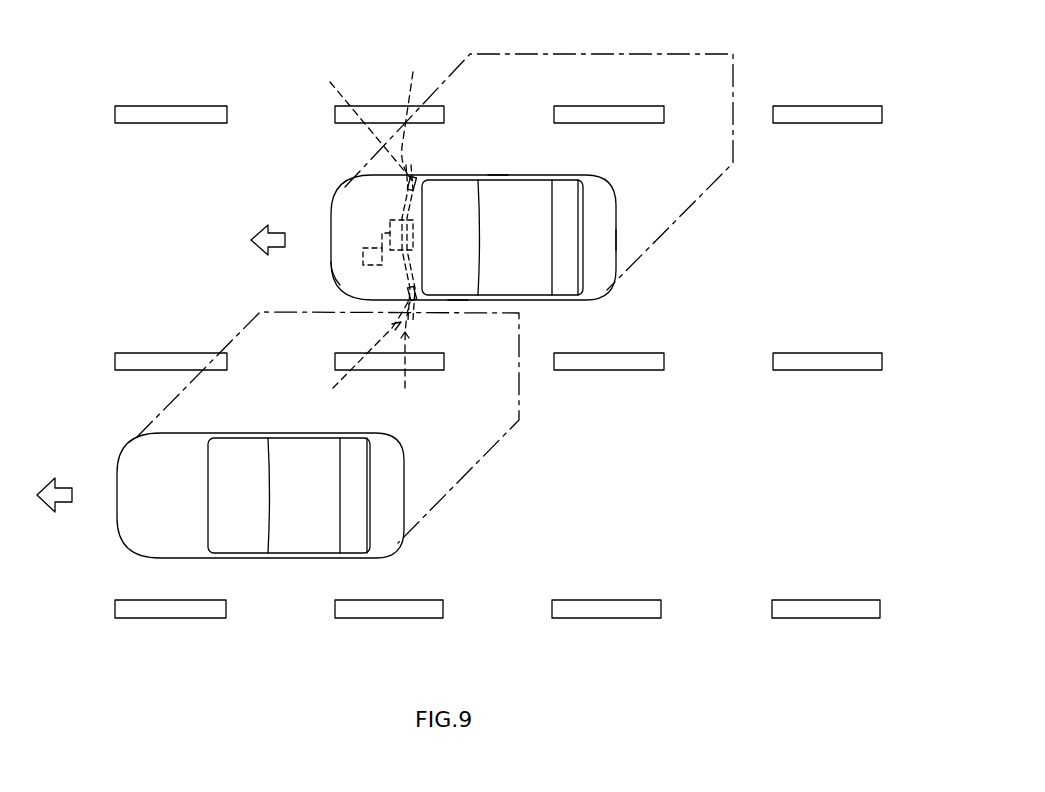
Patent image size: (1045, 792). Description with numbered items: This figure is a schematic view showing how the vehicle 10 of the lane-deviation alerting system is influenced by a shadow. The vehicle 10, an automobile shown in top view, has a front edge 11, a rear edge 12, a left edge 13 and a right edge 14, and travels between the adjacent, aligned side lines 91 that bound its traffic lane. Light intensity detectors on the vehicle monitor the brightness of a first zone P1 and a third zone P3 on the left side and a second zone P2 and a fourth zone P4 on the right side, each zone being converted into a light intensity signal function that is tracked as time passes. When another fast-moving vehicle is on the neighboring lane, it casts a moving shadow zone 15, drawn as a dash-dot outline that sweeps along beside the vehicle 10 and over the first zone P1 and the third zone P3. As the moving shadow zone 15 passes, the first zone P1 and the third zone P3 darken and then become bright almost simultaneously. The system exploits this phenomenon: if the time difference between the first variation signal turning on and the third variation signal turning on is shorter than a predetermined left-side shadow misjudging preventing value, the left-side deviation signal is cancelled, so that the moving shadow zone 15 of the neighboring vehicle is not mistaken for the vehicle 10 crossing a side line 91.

The vehicle 10 is at (620, 196).
The front edge 11 is at (332, 275).
The rear edge 12 is at (615, 240).
The left edge 13 is at (458, 300).
The right edge 14 is at (498, 177).
The moving shadow zone 15 is at (733, 82).
The side line 91 is at (650, 355).
The first zone P1 is at (364, 356).
The second zone P2 is at (351, 122).
The third zone P3 is at (408, 362).
The fourth zone P4 is at (410, 112).